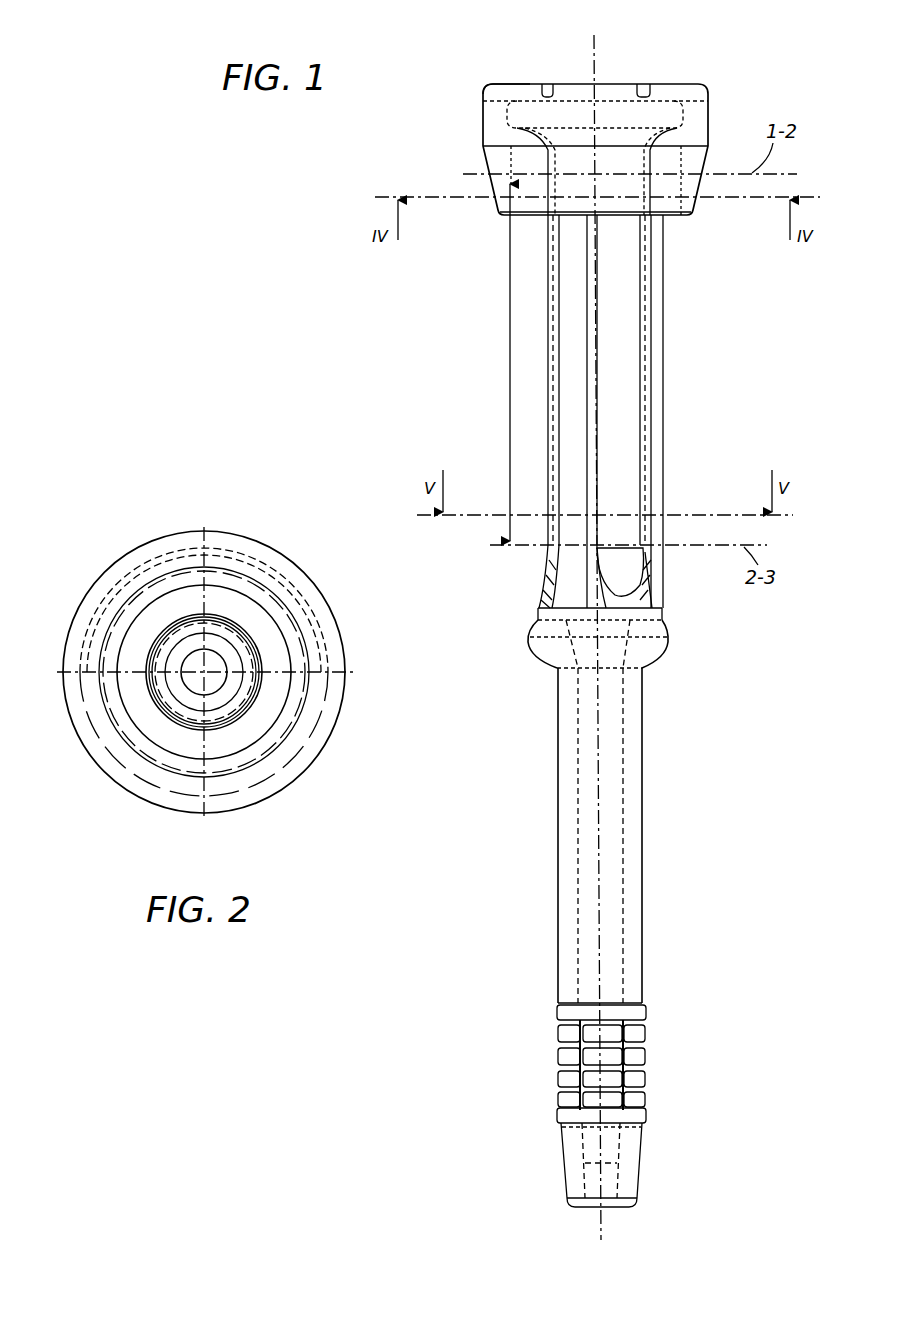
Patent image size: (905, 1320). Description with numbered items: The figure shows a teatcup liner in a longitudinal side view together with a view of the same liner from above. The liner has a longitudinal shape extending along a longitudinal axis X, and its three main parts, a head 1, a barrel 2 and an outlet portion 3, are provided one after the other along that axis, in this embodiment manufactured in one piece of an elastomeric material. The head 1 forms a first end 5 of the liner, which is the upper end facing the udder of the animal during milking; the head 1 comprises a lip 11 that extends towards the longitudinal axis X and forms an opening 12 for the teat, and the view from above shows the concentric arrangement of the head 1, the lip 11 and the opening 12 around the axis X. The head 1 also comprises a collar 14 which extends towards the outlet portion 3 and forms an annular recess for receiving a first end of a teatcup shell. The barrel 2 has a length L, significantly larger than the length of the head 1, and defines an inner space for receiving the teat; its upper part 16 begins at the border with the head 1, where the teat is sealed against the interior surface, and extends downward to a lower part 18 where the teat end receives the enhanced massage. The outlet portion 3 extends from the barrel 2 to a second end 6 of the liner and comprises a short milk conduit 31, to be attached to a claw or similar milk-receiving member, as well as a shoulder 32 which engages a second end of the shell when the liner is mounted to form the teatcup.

In FIG. 1, the head 1 is at (697, 110).
In FIG. 2, the head 1 is at (113, 562).
In FIG. 1, the barrel 2 is at (655, 360).
In FIG. 1, the outlet portion 3 is at (630, 827).
In FIG. 1, the first end 5 is at (508, 83).
In FIG. 1, the second end 6 is at (578, 1206).
In FIG. 1, the lip 11 is at (543, 90).
In FIG. 2, the lip 11 is at (217, 602).
In FIG. 1, the opening 12 is at (610, 90).
In FIG. 2, the opening 12 is at (183, 677).
In FIG. 1, the collar 14 is at (687, 203).
In FIG. 1, the upper part of the barrel 16 is at (548, 190).
In FIG. 1, the lower part of the barrel 18 is at (548, 272).
In FIG. 1, the short milk conduit 31 is at (637, 907).
In FIG. 1, the shoulder 32 is at (665, 628).
In FIG. 1, the length of the barrel L is at (509, 352).
In FIG. 1, the longitudinal axis X is at (598, 842).
In FIG. 2, the longitudinal axis X is at (210, 667).